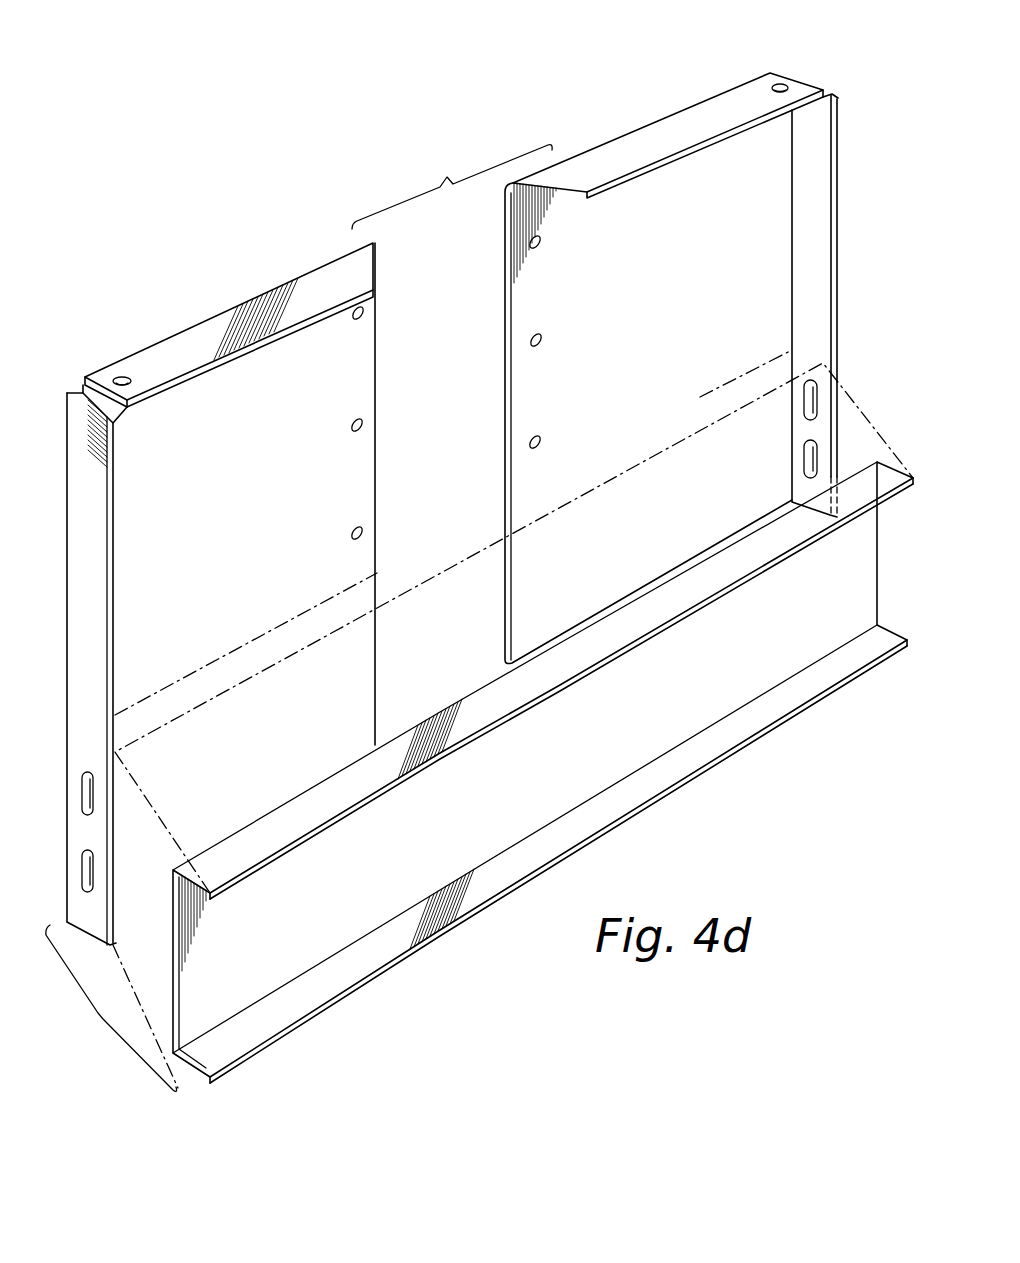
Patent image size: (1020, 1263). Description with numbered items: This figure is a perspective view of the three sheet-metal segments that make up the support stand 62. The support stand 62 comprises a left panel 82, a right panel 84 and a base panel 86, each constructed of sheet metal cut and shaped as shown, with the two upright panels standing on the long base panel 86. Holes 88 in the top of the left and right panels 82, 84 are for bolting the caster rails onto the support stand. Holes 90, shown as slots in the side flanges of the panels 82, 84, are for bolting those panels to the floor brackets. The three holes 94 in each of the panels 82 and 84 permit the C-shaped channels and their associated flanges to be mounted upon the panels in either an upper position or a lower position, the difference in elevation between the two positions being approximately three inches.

The support stand 62 is at (447, 177).
The left panel 82 is at (222, 665).
The right panel 84 is at (671, 368).
The base panel 86 is at (514, 723).
The holes 88 is at (122, 376).
The holes 90 is at (84, 793).
The holes 94 is at (353, 320).